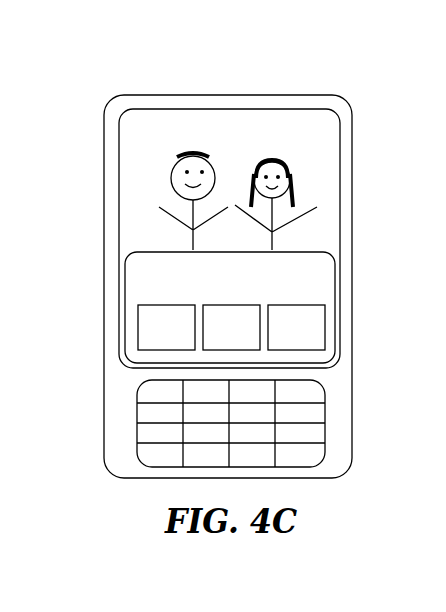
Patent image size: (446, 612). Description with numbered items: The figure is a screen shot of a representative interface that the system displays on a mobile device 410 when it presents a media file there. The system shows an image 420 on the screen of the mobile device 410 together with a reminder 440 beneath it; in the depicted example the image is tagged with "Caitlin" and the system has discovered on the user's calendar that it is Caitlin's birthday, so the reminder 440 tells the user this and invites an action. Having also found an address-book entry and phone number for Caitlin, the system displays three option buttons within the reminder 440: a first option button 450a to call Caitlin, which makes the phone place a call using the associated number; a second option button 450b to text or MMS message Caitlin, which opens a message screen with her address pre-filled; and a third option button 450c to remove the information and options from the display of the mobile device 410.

The mobile device 410 is at (137, 85).
The image 420 is at (318, 141).
The reminder 440 is at (146, 271).
The first option button 450a is at (140, 305).
The second option button 450b is at (218, 350).
The third option button 450c is at (325, 306).